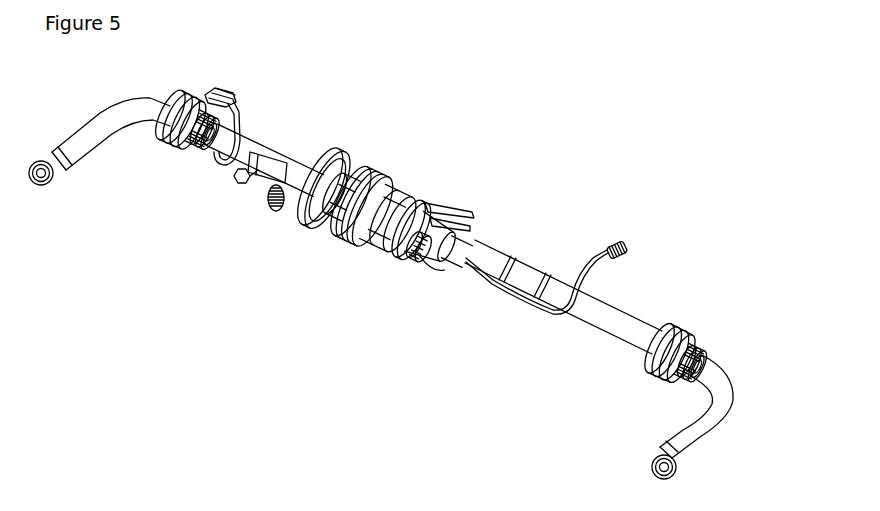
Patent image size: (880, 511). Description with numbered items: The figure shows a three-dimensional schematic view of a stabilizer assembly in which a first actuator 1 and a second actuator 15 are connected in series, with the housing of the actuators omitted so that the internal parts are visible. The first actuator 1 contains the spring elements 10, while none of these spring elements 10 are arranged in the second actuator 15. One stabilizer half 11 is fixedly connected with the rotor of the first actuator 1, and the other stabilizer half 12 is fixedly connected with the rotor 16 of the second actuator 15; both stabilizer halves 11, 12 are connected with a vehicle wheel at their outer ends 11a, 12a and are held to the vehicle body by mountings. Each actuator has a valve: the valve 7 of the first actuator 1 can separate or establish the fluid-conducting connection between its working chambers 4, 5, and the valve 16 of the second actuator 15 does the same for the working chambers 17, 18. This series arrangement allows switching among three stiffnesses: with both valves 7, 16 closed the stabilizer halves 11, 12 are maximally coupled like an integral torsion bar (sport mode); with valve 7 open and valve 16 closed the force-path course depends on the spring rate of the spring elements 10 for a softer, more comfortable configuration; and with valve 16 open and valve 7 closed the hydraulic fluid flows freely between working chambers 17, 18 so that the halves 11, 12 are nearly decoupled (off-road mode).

The actuator 1 is at (345, 203).
The working chamber 4 is at (333, 193).
The working chamber 5 is at (350, 168).
The valve 7 is at (265, 173).
The spring elements 10 is at (323, 177).
The stabilizer half 11 is at (107, 123).
The outer end 11a is at (42, 178).
The stabilizer half 12 is at (583, 313).
The outer end 12a is at (658, 463).
The second actuator 15 is at (412, 177).
The valve 16 is at (418, 250).
The working chamber 17 is at (382, 223).
The working chamber 18 is at (400, 200).